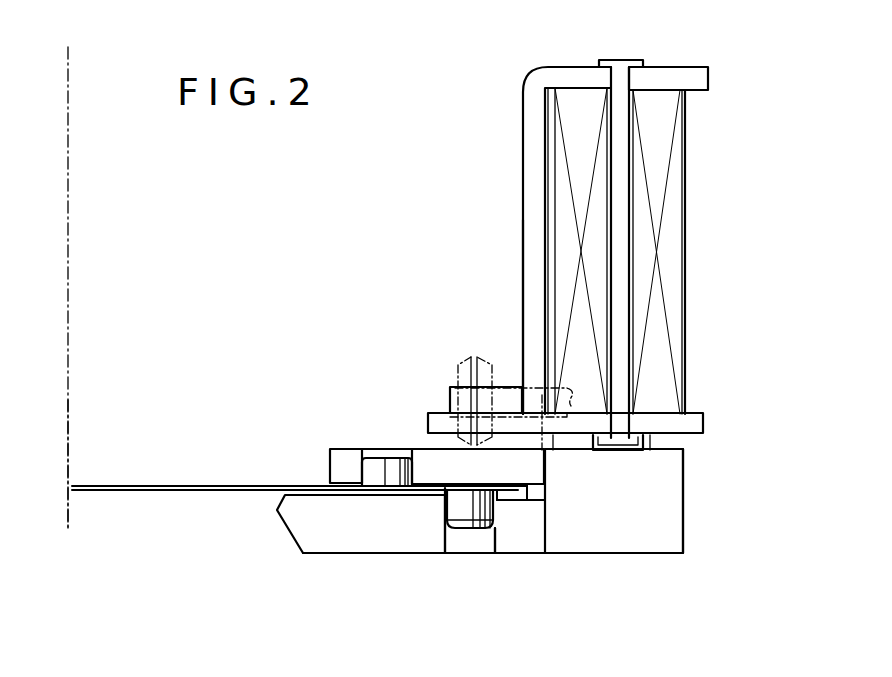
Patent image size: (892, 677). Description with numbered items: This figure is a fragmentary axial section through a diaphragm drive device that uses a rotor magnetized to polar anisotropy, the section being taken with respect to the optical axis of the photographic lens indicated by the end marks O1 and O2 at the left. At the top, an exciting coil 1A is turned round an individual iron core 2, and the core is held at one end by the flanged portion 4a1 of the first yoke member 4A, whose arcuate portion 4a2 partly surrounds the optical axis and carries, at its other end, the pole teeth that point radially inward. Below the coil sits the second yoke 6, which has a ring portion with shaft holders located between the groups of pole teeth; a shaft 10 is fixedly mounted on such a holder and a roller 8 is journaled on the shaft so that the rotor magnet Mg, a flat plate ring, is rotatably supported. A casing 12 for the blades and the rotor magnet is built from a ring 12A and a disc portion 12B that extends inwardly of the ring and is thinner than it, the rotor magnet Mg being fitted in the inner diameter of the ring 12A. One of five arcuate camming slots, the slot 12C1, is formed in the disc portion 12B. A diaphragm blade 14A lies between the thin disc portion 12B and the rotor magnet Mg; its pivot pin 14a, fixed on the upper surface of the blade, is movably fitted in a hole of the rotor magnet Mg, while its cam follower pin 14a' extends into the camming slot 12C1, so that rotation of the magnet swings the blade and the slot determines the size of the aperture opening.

The exciting coil 1A is at (660, 148).
The iron core 2 is at (622, 218).
The first yoke member 4A is at (535, 145).
The flanged portion 4a1 is at (670, 78).
The arcuate portion 4a2 is at (523, 220).
The second yoke 6 is at (691, 414).
The roller 8 is at (463, 373).
The shaft 10 is at (508, 383).
The rotor magnet Mg is at (428, 458).
The pivot pin 14a is at (371, 437).
The cam follower pin 14a' is at (487, 548).
The diaphragm blade 14A is at (202, 488).
The casing 12 is at (600, 528).
The ring 12A is at (652, 528).
The disc portion 12B is at (340, 530).
The arcuate camming slot 12C1 is at (457, 542).
The pivot axis end O1 is at (74, 278).
The pivot axis end O2 is at (70, 478).